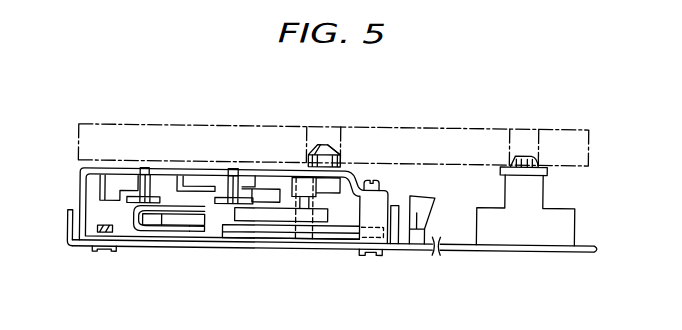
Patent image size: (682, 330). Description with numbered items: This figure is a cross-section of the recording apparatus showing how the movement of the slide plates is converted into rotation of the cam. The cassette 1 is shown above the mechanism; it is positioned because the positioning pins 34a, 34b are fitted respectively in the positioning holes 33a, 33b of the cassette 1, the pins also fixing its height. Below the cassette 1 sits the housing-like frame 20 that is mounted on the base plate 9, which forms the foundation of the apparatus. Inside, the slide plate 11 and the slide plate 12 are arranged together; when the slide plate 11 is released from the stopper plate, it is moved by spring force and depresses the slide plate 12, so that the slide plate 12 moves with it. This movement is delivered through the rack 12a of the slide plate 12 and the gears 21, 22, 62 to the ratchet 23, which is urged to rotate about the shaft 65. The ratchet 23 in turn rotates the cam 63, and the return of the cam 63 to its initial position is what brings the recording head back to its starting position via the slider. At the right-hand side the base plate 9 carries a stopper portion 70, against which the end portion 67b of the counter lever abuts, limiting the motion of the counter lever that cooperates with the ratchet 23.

The cassette 1 is at (271, 129).
The base plate 9 is at (334, 249).
The slide plate 11 is at (182, 229).
The slide plate 12 is at (160, 234).
The rack 12a is at (207, 234).
The housing 20 is at (79, 182).
The gear 21 is at (116, 183).
The gear 22 is at (203, 175).
The ratchet 23 is at (274, 222).
The positioning hole 33a is at (324, 125).
The positioning hole 33b is at (517, 133).
The positioning pin 34a is at (343, 149).
The positioning pin 34b is at (538, 147).
The gear 62 is at (291, 239).
The cam 63 is at (256, 239).
The shaft 65 is at (313, 240).
The end portion of counter lever 67b is at (503, 262).
The stopper portion 70 is at (399, 243).